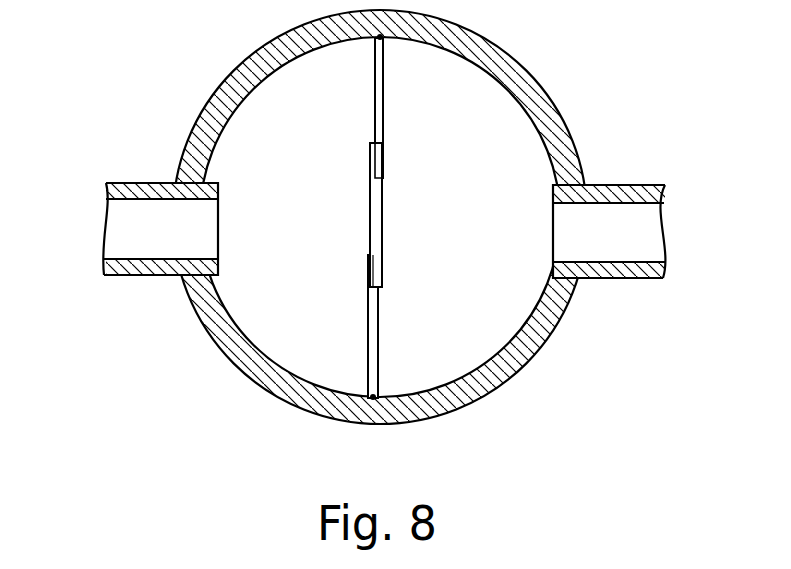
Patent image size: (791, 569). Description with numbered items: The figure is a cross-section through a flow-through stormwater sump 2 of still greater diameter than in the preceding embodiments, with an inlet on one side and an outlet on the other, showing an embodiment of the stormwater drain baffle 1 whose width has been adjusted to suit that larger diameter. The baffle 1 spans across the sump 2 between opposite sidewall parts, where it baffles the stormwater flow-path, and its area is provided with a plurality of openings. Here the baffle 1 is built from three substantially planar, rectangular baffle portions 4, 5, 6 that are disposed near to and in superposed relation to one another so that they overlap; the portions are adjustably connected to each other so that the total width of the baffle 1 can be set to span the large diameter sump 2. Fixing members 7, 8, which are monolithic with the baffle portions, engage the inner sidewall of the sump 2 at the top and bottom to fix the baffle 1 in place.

The stormwater drain baffle 1 is at (394, 217).
The stormwater sump 2 is at (213, 97).
The baffle portion 4 is at (375, 88).
The baffle portion 5 is at (368, 340).
The baffle portion 6 is at (372, 208).
The fixing member 7 is at (382, 37).
The fixing member 8 is at (376, 396).